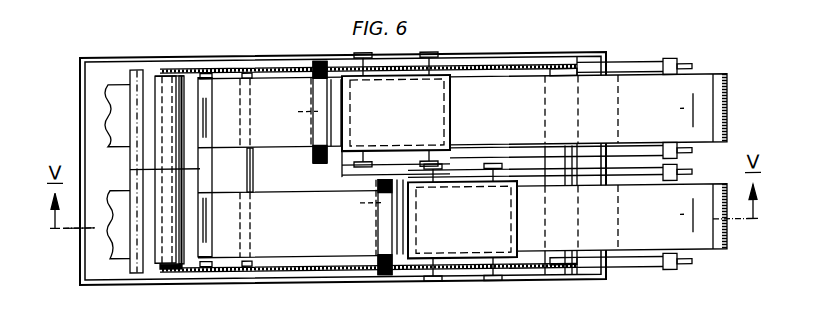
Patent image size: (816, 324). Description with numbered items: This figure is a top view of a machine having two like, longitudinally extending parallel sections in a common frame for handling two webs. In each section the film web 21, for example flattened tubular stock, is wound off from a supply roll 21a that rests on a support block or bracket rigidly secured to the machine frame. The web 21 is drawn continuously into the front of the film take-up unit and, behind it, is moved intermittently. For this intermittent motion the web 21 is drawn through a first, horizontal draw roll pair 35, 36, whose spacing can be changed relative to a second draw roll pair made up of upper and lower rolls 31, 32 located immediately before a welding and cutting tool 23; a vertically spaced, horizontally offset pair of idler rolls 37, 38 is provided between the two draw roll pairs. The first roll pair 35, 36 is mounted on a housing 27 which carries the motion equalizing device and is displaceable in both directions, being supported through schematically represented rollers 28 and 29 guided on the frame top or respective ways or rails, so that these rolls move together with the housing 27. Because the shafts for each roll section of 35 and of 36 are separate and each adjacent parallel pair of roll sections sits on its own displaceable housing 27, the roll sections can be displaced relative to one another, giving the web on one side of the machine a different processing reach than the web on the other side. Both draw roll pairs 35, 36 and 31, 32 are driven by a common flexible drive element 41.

The film web 21 is at (110, 113).
The supply roll 21a is at (712, 121).
The welding and cutting tool 23 is at (132, 89).
The housing 27 is at (427, 242).
The roller 28 is at (437, 287).
The roller 29 is at (494, 288).
The upper roll of second draw roll pair 31 is at (176, 123).
The lower roll of second draw roll pair 32 is at (157, 270).
The roll of first horizontal draw roll pair 35 is at (318, 92).
The roll of first horizontal draw roll pair 36 is at (333, 162).
The idler roll 37 is at (208, 95).
The idler roll 38 is at (255, 165).
The common flexible drive element 41 is at (488, 71).